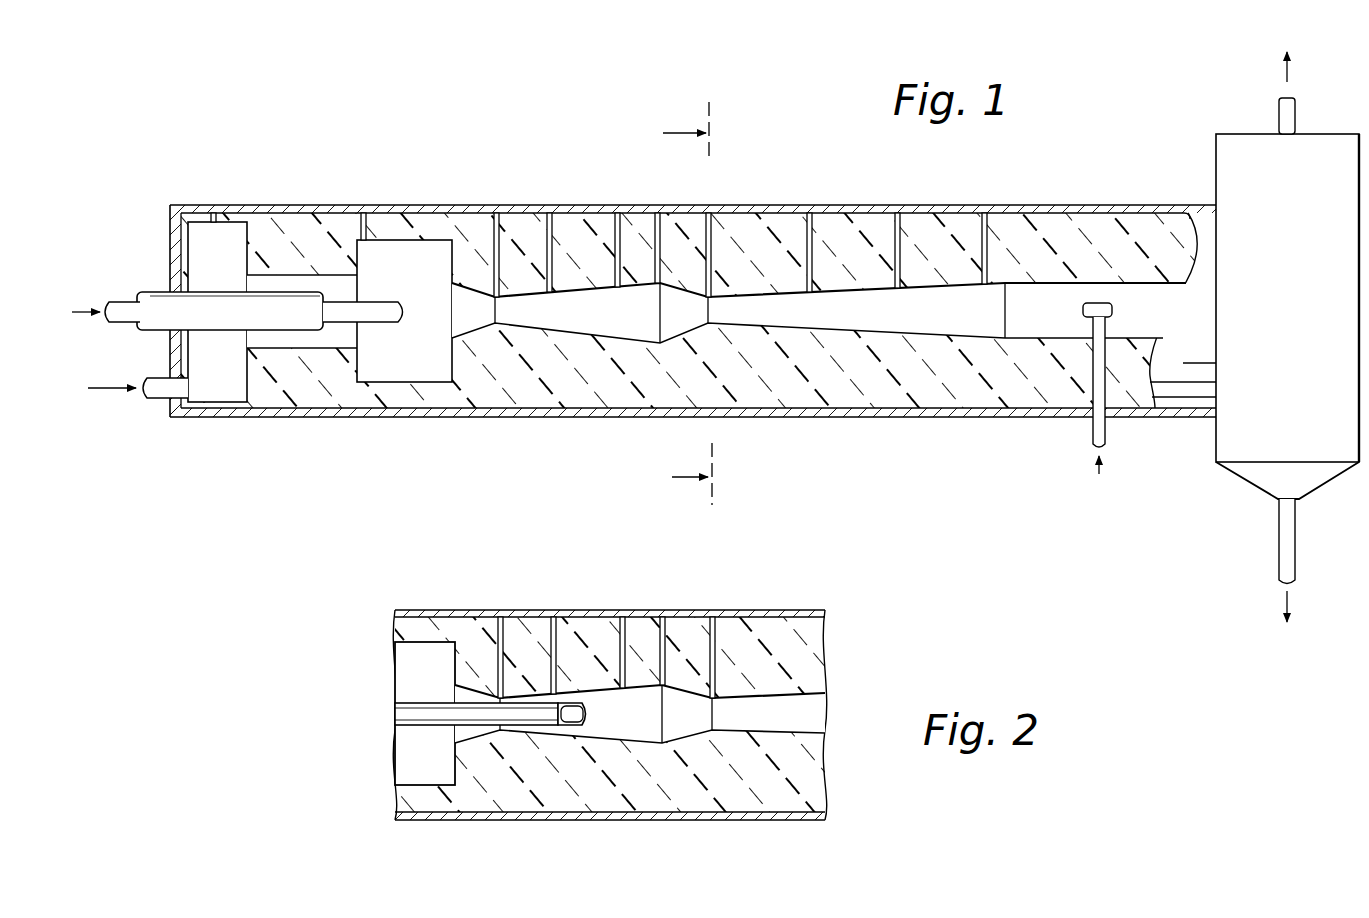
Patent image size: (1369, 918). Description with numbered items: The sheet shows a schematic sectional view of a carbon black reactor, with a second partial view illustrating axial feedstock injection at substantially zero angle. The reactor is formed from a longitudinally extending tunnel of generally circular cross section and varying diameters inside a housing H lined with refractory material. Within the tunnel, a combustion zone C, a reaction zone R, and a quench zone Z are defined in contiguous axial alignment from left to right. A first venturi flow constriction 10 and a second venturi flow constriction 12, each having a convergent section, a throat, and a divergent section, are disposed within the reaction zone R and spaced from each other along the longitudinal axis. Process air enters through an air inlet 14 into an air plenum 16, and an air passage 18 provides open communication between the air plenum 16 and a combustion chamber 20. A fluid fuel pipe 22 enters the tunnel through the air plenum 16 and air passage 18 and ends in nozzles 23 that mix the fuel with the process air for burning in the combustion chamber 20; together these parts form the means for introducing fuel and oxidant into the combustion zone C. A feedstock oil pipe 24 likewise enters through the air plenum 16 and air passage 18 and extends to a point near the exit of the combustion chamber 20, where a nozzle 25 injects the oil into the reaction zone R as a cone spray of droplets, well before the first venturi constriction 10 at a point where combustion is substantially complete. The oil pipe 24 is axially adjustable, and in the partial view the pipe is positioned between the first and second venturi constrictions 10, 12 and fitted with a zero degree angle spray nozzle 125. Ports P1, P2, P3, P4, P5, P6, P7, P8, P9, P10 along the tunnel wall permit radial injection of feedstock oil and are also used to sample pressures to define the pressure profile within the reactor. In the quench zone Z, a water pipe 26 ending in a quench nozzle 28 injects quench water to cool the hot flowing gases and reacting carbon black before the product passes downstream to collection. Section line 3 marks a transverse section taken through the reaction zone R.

In FIG. 1, the first venturi flow constriction 10 is at (519, 324).
In FIG. 2, the first venturi flow constriction 10 is at (640, 714).
In FIG. 1, the second venturi flow constriction 12 is at (725, 324).
In FIG. 1, the air inlet 14 is at (152, 402).
In FIG. 1, the air plenum 16 is at (225, 386).
In FIG. 1, the air passage 18 is at (303, 345).
In FIG. 1, the combustion chamber 20 is at (378, 372).
In FIG. 2, the combustion chamber 20 is at (425, 713).
In FIG. 1, the fluid fuel pipe 22 is at (150, 291).
In FIG. 1, the nozzles 23 is at (328, 290).
In FIG. 1, the feedstock oil pipe 24 is at (120, 325).
In FIG. 1, the nozzle 25 is at (408, 303).
In FIG. 1, the water pipe 26 is at (1112, 432).
In FIG. 1, the quench nozzle 28 is at (1082, 298).
In FIG. 2, the zero degree angle spray nozzle 125 is at (593, 710).
In FIG. 1, the housing H is at (434, 413).
In FIG. 2, the housing H is at (593, 821).
In FIG. 1, the combustion zone C is at (412, 359).
In FIG. 1, the reaction zone R is at (606, 325).
In FIG. 1, the quench zone Z is at (1031, 324).
In FIG. 1, the section line 3- 3 is at (676, 303).
In FIG. 1, the port P1 is at (213, 199).
In FIG. 1, the port P2 is at (363, 208).
In FIG. 1, the port P3 is at (498, 237).
In FIG. 2, the port P3 is at (498, 640).
In FIG. 1, the port P4 is at (552, 235).
In FIG. 2, the port P4 is at (553, 638).
In FIG. 1, the port P5 is at (620, 232).
In FIG. 2, the port P5 is at (620, 635).
In FIG. 1, the port P6 is at (660, 230).
In FIG. 2, the port P6 is at (663, 633).
In FIG. 1, the port P7 is at (707, 237).
In FIG. 2, the port P7 is at (712, 640).
In FIG. 1, the port P8 is at (810, 235).
In FIG. 1, the port P9 is at (898, 232).
In FIG. 1, the port P10 is at (990, 230).